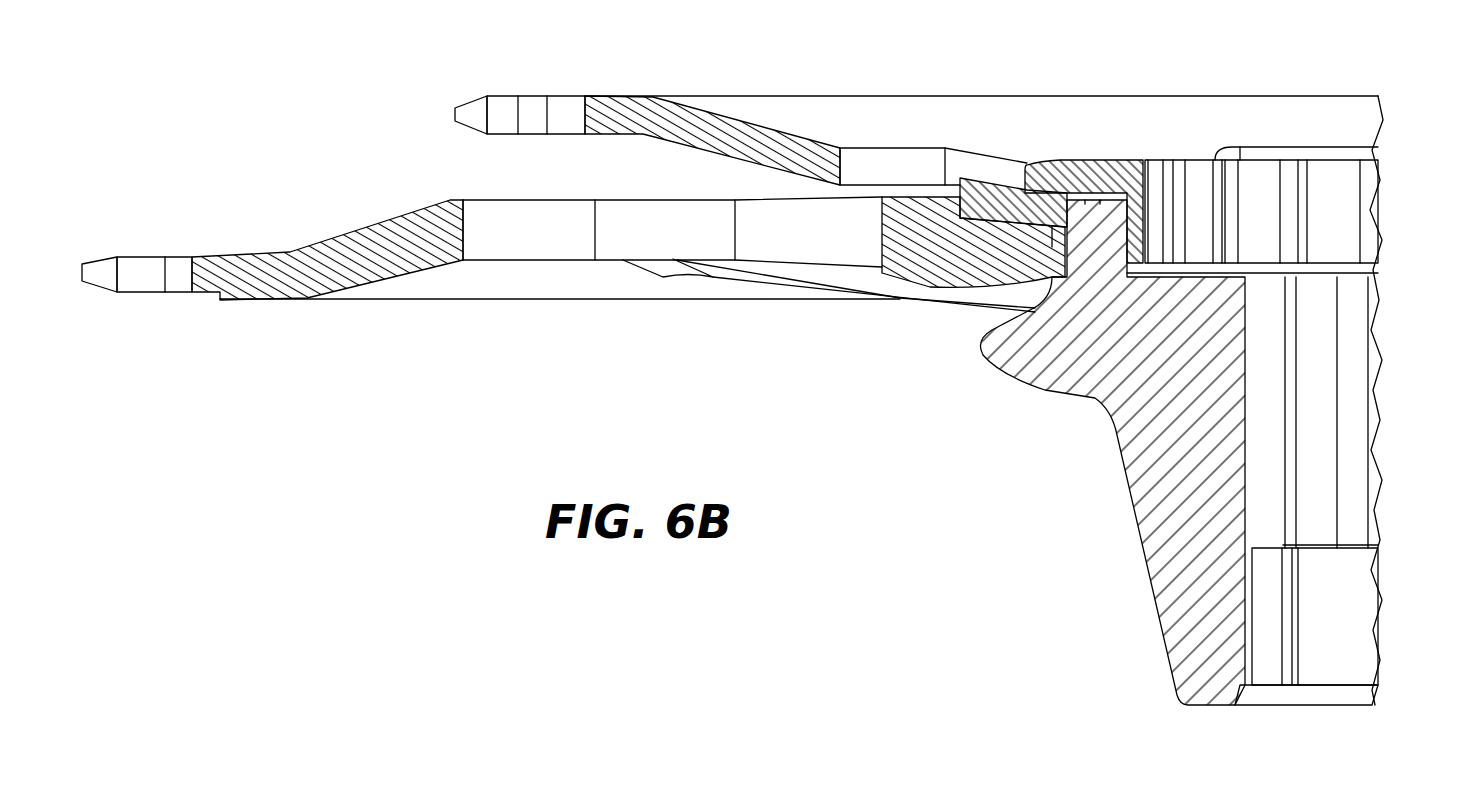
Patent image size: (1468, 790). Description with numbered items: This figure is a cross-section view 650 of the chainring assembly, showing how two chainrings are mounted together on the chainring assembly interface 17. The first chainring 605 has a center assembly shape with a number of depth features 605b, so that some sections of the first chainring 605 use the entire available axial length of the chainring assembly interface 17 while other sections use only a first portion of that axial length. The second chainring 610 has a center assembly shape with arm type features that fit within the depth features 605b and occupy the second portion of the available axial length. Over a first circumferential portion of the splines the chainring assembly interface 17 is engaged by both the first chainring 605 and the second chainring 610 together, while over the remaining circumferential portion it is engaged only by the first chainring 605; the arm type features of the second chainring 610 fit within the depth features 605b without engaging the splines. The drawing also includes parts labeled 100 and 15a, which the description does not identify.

The cross-section view 650 is at (240, 70).
The second chainring 610 is at (578, 96).
The first chainring 605 is at (208, 296).
The depth features 605b is at (1052, 162).
The chainring assembly interface 17 is at (1005, 376).
The shaft assembly 100 is at (1367, 215).
The handle portion 15a is at (1365, 607).